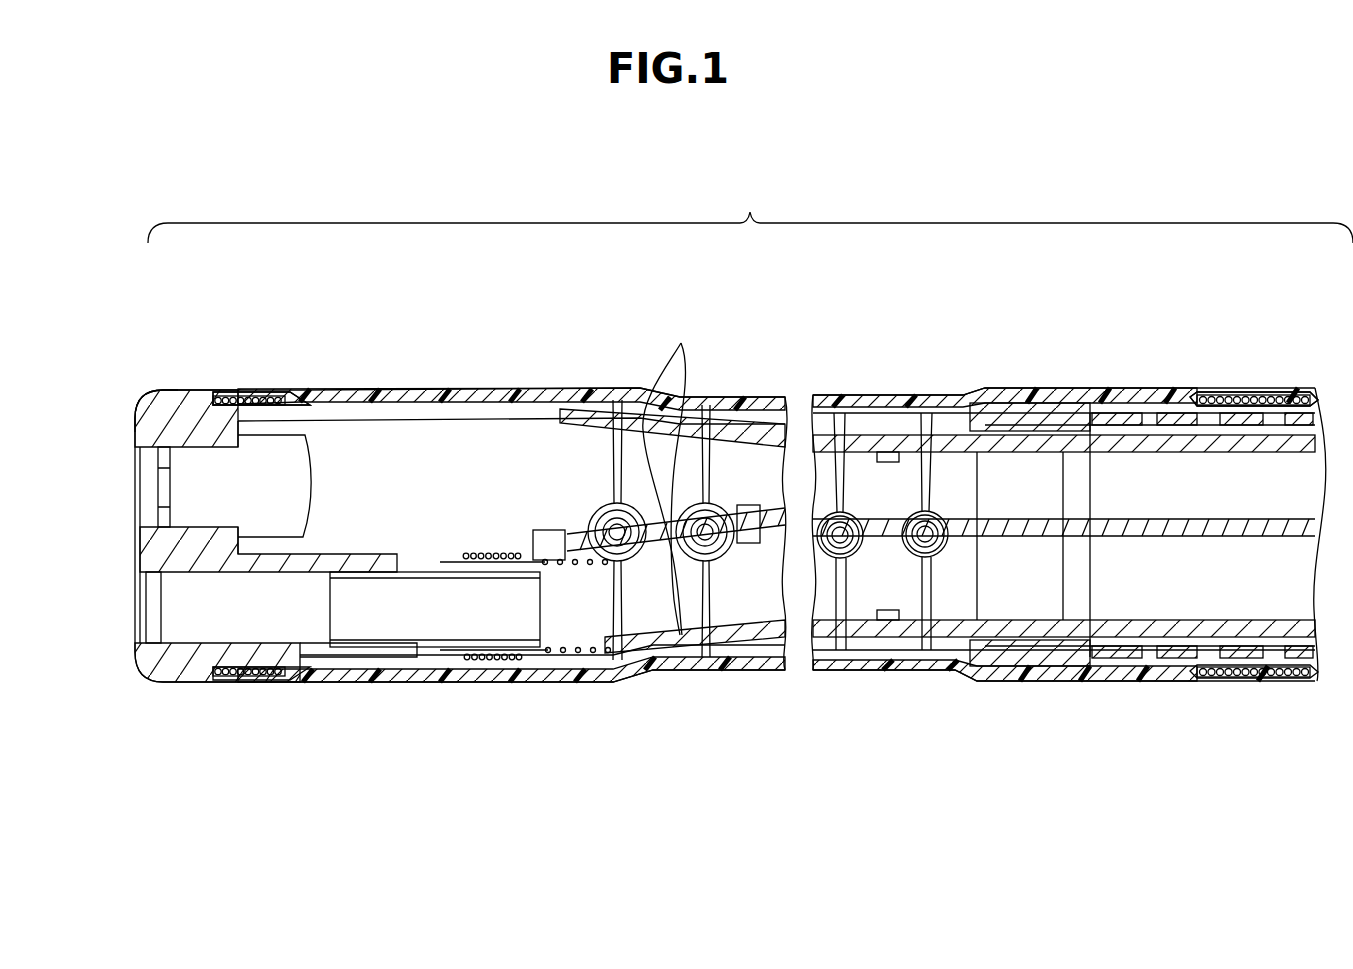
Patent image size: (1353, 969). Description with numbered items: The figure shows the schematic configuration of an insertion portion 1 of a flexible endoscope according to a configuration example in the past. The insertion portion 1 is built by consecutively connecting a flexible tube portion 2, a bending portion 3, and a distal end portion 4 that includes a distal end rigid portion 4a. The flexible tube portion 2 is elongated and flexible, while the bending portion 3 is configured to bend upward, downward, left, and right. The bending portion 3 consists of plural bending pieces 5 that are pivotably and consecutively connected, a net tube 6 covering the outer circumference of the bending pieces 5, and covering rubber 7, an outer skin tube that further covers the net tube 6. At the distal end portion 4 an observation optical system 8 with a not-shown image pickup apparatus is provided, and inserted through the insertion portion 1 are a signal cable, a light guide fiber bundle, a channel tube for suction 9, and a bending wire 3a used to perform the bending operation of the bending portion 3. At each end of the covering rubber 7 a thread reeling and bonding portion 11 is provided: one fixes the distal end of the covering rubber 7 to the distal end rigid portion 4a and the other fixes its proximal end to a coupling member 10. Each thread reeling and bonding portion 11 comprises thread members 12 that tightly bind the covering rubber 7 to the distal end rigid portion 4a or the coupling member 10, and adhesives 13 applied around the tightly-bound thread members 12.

The insertion portion 1 is at (750, 207).
The flexible tube portion 2 is at (1313, 374).
The bending portion 3 is at (786, 370).
The bending wire 3a is at (671, 471).
The distal end portion 4 is at (186, 372).
The distal end rigid portion 4a is at (160, 391).
The bending pieces 5 is at (490, 392).
The net tube 6 is at (558, 392).
The covering rubber 7 is at (425, 392).
The observation optical system 8 is at (323, 446).
The channel tube for suction 9 is at (558, 653).
The coupling member 10 is at (1075, 405).
The thread reeling and bonding portion 11 is at (303, 327).
The thread members 12 is at (241, 396).
The adhesives 13 is at (284, 395).